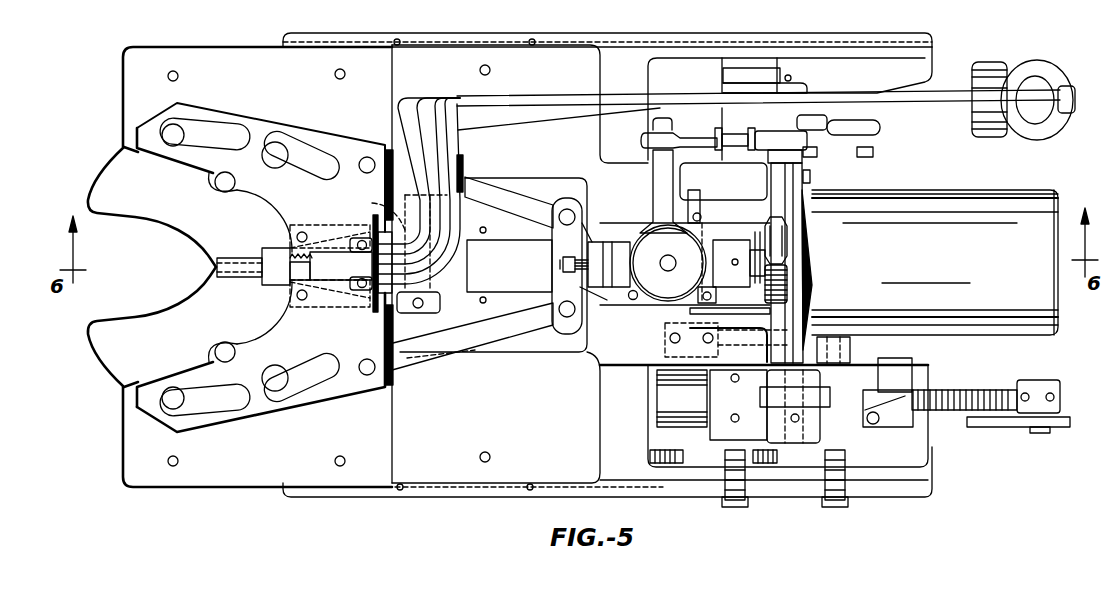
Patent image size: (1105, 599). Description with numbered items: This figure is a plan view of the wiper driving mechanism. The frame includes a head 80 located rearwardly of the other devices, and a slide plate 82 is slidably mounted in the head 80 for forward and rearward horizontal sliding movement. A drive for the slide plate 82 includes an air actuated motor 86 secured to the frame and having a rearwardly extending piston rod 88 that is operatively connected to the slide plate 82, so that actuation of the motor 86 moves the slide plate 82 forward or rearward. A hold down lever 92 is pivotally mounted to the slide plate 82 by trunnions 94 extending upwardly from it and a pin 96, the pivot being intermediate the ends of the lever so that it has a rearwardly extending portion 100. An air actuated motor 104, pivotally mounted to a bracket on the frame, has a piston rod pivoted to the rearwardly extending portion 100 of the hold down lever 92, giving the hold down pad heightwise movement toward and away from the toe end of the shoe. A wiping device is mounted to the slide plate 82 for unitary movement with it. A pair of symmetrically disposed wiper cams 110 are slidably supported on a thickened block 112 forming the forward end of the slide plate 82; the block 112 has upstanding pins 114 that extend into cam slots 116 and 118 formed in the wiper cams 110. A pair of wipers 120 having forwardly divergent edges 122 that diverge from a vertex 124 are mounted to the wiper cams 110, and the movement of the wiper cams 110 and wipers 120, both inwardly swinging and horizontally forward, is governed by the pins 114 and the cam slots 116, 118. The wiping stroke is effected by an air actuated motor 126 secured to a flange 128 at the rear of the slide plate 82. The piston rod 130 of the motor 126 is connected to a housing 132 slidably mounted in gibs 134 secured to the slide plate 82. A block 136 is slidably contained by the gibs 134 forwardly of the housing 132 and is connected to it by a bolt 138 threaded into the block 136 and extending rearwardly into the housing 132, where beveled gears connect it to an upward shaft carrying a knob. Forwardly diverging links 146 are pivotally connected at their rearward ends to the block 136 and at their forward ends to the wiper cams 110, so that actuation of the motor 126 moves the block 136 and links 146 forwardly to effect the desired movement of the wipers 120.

The head 80 is at (675, 490).
The slide plate 82 is at (523, 415).
The air actuated motor 86 is at (670, 397).
The piston rod 88 is at (948, 395).
The hold down lever 92 is at (452, 92).
The trunnions 94 is at (448, 315).
The pin 96 is at (404, 217).
The rearwardly extending portion 100 is at (628, 102).
The air actuated motor 104 is at (1028, 128).
The wiper cams 110 is at (292, 127).
The thickened block 112 is at (205, 472).
The pins 114 is at (263, 152).
The cam slots 116 is at (195, 127).
The cam slots 118 is at (277, 168).
The wipers 120 is at (180, 213).
The forwardly divergent edges 122 is at (125, 215).
The vertex 124 is at (207, 270).
The air actuated motor 126 is at (967, 322).
The flange 128 is at (800, 228).
The piston rod 130 is at (758, 283).
The housing 132 is at (733, 250).
The gibs 134 is at (612, 230).
The block 136 is at (583, 225).
The bolt 138 is at (600, 305).
The forwardly diverging links 146 is at (498, 197).